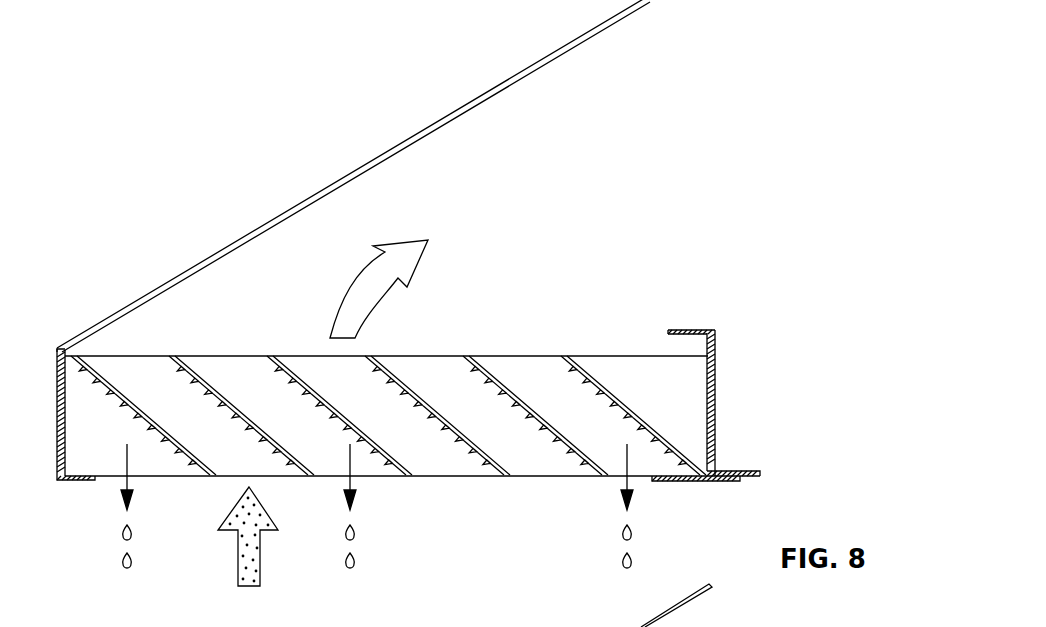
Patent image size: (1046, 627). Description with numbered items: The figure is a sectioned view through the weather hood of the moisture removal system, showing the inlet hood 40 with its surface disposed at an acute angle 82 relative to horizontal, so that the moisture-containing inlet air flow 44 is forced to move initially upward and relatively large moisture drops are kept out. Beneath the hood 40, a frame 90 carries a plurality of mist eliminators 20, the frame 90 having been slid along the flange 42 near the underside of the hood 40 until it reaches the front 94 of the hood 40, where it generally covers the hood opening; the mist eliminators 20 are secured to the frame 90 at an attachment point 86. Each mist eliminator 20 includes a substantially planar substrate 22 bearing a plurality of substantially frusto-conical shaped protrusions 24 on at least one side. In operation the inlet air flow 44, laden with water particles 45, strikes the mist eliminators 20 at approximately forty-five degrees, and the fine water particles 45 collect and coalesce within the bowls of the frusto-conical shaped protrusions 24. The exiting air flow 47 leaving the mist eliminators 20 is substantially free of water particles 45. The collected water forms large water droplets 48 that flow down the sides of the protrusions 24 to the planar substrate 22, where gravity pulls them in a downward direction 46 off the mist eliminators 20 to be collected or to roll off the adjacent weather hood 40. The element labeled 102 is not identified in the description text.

The mist eliminator 20 is at (282, 348).
The substrate 22 is at (114, 384).
The frusto-conical shaped protrusion 24 is at (187, 370).
The inlet hood 40 is at (312, 189).
The flange 42 is at (75, 481).
The inlet air flow 44 is at (250, 547).
The water particles 45 is at (247, 563).
The downward direction 46 is at (132, 482).
The exiting air flow 47 is at (408, 258).
The large water droplets 48 is at (133, 561).
The acute angle 82 is at (530, 70).
The attachment point 86 is at (278, 356).
The frame 90 is at (510, 356).
The front 94 is at (57, 418).
The right side wall 102 is at (715, 455).